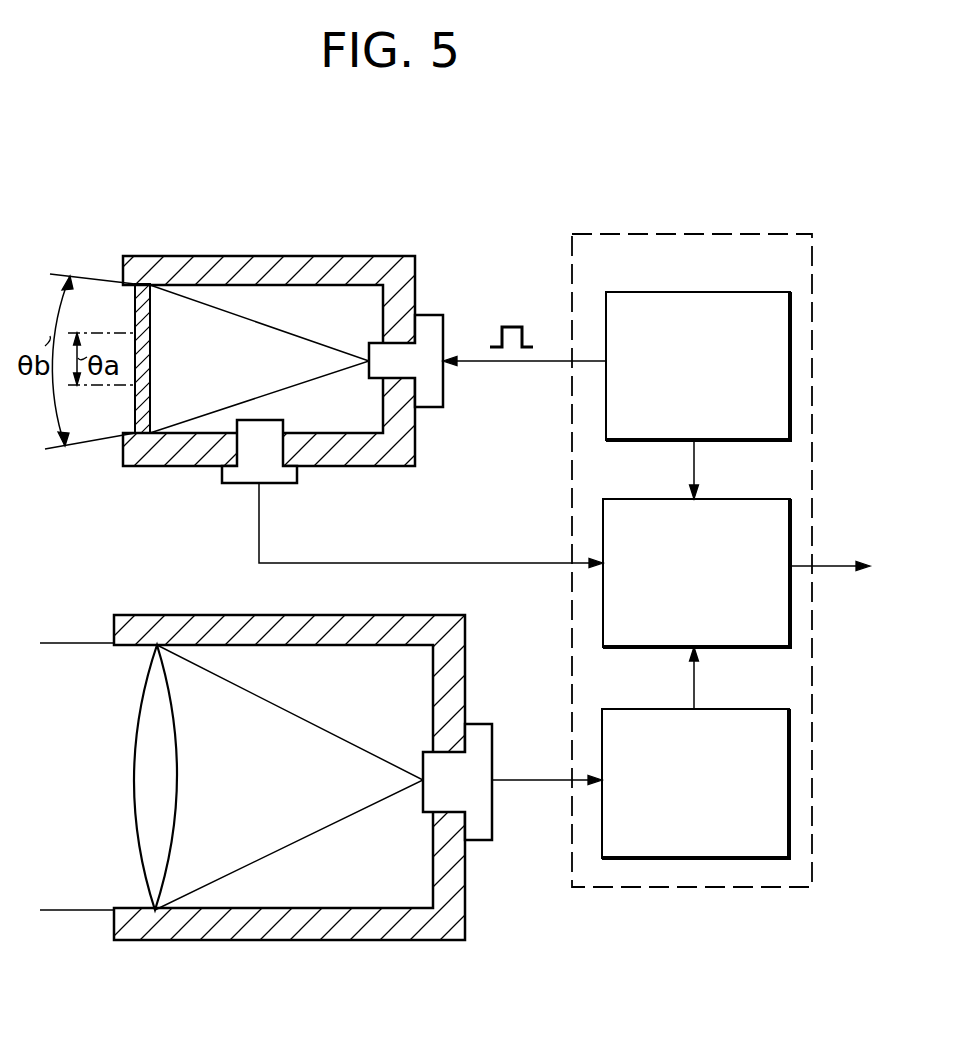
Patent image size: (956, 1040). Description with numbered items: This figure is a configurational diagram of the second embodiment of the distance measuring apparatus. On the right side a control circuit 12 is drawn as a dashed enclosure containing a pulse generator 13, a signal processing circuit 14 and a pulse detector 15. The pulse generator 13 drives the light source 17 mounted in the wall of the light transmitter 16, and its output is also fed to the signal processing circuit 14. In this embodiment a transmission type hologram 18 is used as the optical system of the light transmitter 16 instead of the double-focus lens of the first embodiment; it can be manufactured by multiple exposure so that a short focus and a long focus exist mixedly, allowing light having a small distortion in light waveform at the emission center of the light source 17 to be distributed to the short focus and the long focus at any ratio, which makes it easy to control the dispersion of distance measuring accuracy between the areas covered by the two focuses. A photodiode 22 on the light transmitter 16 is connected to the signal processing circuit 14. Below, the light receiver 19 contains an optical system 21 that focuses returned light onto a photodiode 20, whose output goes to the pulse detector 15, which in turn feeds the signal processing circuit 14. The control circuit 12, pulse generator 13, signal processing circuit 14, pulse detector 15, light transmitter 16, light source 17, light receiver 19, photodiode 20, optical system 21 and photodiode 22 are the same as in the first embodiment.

The control circuit 12 is at (658, 232).
The pulse generator 13 is at (727, 292).
The signal processing circuit 14 is at (740, 499).
The pulse detector 15 is at (737, 709).
The light transmitter 16 is at (313, 266).
The light source 17 is at (427, 318).
The transmission type hologram 18 is at (145, 305).
The light receiver 19 is at (178, 618).
The photodiode 20 is at (480, 732).
The optical system 21 is at (178, 828).
The photodiode 22 is at (287, 482).